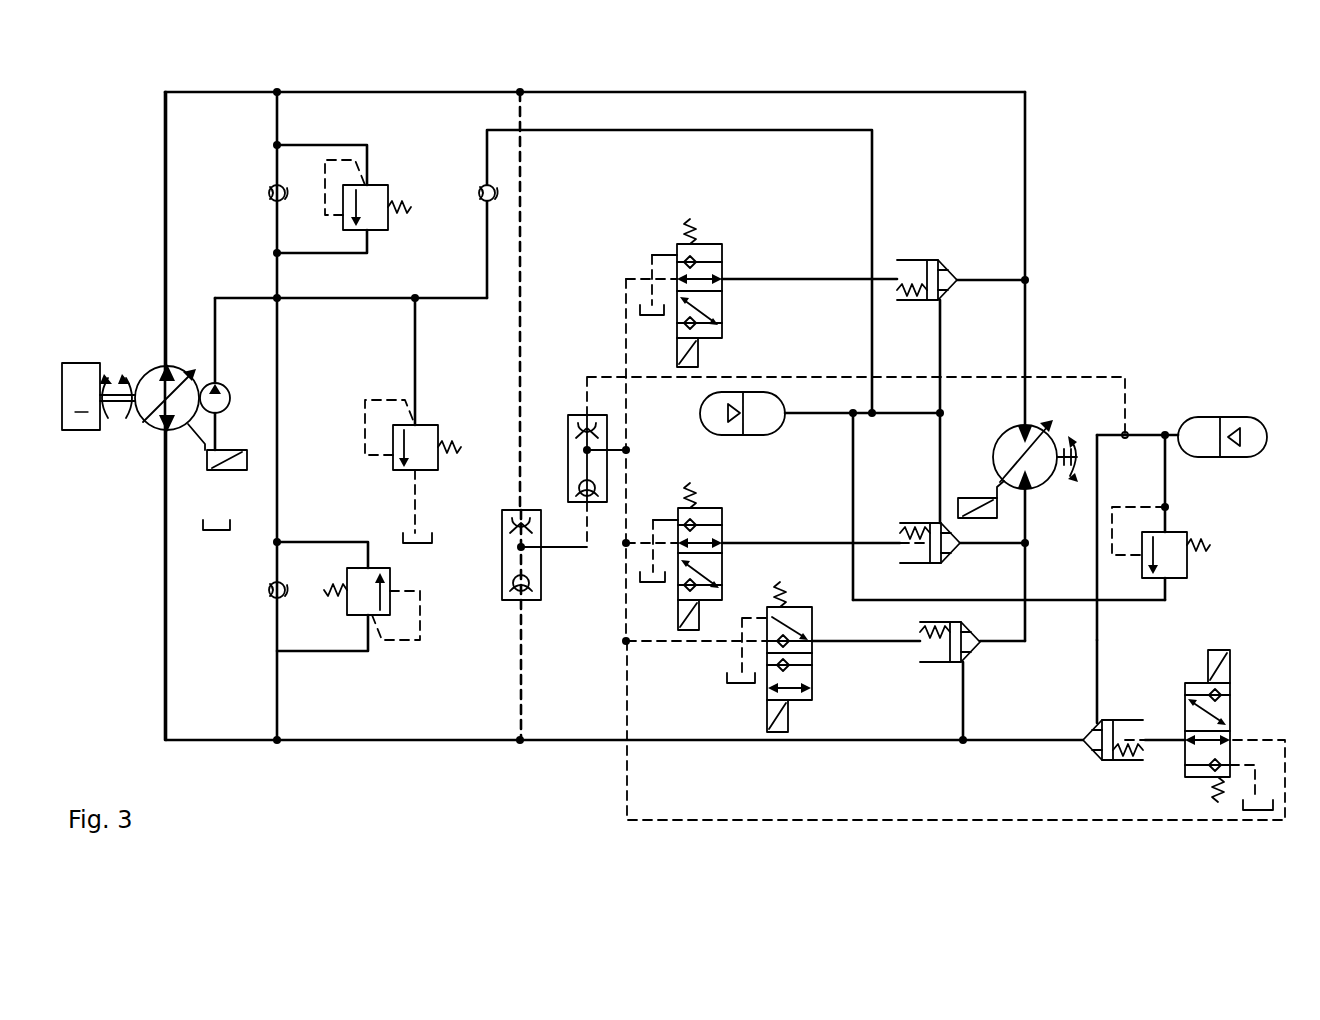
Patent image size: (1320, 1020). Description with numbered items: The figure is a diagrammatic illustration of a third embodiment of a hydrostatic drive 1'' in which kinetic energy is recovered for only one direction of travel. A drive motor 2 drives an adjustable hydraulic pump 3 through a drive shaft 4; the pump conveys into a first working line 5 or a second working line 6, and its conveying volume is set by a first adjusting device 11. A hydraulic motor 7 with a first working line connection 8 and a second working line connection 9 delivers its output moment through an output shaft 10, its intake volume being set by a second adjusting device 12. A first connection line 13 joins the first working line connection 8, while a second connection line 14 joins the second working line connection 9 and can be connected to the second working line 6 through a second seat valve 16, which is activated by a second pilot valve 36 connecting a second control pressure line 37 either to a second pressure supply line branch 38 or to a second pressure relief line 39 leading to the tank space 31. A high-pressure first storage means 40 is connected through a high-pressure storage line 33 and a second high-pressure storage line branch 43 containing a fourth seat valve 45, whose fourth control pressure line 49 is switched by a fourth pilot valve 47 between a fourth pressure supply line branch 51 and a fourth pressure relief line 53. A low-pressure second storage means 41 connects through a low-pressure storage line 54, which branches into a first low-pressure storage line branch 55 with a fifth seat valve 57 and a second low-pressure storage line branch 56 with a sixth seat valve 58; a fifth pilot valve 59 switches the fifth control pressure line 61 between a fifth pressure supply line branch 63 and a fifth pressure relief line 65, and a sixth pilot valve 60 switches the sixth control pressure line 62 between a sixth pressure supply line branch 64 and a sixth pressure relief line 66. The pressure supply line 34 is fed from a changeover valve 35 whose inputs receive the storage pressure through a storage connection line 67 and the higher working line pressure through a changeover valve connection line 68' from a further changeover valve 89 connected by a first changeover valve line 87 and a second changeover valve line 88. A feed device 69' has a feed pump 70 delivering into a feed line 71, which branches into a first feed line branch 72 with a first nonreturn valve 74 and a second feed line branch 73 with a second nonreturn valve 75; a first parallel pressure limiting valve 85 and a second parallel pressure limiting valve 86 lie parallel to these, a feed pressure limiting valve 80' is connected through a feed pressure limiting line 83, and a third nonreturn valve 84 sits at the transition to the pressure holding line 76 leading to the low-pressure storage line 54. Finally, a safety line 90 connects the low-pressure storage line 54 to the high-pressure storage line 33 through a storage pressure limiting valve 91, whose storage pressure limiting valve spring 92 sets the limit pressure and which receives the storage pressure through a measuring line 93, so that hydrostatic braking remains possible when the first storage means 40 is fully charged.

The hydrostatic drive 1'' is at (93, 64).
The drive motor 2 is at (81, 396).
The hydraulic pump 3 is at (178, 372).
The drive shaft 4 is at (118, 385).
The first working line 5 is at (213, 90).
The second working line 6 is at (215, 742).
The hydraulic motor 7 is at (1005, 445).
The first working line connection 8 is at (1020, 428).
The second working line connection 9 is at (1033, 490).
The output shaft 10 is at (1075, 452).
The first adjusting device 11 is at (238, 471).
The second adjusting device 12 is at (968, 500).
The first connection line 13 is at (1027, 186).
The second connection line 14 is at (1028, 598).
The second seat valve 16 is at (930, 684).
The tank space 31 is at (211, 533).
The high-pressure storage line 33 is at (1130, 432).
The pressure supply line 34 is at (628, 416).
The changeover valve 35 is at (568, 446).
The second pilot valve 36 is at (757, 728).
The second control pressure line 37 is at (832, 645).
The second pressure supply line branch 38 is at (665, 645).
The second pressure relief line 39 is at (735, 658).
The first storage means 40 is at (1203, 417).
The second storage means 41 is at (760, 437).
The second high-pressure storage line branch 43 is at (1095, 640).
The fourth seat valve 45 is at (1078, 765).
The fourth pilot valve 47 is at (1168, 769).
The fourth control pressure line 49 is at (1166, 738).
The fourth pressure supply line branch 51 is at (915, 818).
The fourth pressure relief line 53 is at (1274, 765).
The low-pressure storage line 54 is at (818, 417).
The first low-pressure storage line branch 55 is at (979, 283).
The second low-pressure storage line branch 56 is at (938, 450).
The fifth seat valve 57 is at (906, 298).
The sixth seat valve 58 is at (920, 585).
The fifth pilot valve 59 is at (658, 341).
The sixth pilot valve 60 is at (658, 607).
The fifth control pressure line 61 is at (778, 283).
The sixth control pressure line 62 is at (790, 540).
The fifth pressure supply line branch 63 is at (630, 276).
The sixth pressure supply line branch 64 is at (633, 540).
The fifth pressure relief line 65 is at (656, 253).
The sixth pressure relief line 66 is at (656, 518).
The storage connection line 67 is at (585, 392).
The changeover valve connection line 68' is at (554, 579).
The feed device 69' is at (157, 241).
The feed pump 70 is at (228, 395).
The feed line 71 is at (243, 296).
The first feed line branch 72 is at (277, 126).
The second feed line branch 73 is at (280, 698).
The first nonreturn valve 74 is at (268, 194).
The second nonreturn valve 75 is at (268, 592).
The pressure holding line 76 is at (797, 132).
The feed pressure limiting valve 80' is at (414, 466).
The feed pressure limiting line 83 is at (417, 354).
The third nonreturn valve 84 is at (478, 194).
The first parallel pressure limiting valve 85 is at (378, 233).
The second parallel pressure limiting valve 86 is at (347, 607).
The first changeover valve line 87 is at (523, 258).
The second changeover valve line 88 is at (520, 666).
The further changeover valve 89 is at (502, 573).
The safety line 90 is at (1128, 603).
The storage pressure limiting valve 91 is at (1181, 569).
The storage pressure limiting valve spring 92 is at (1212, 544).
The measuring line 93 is at (1128, 505).